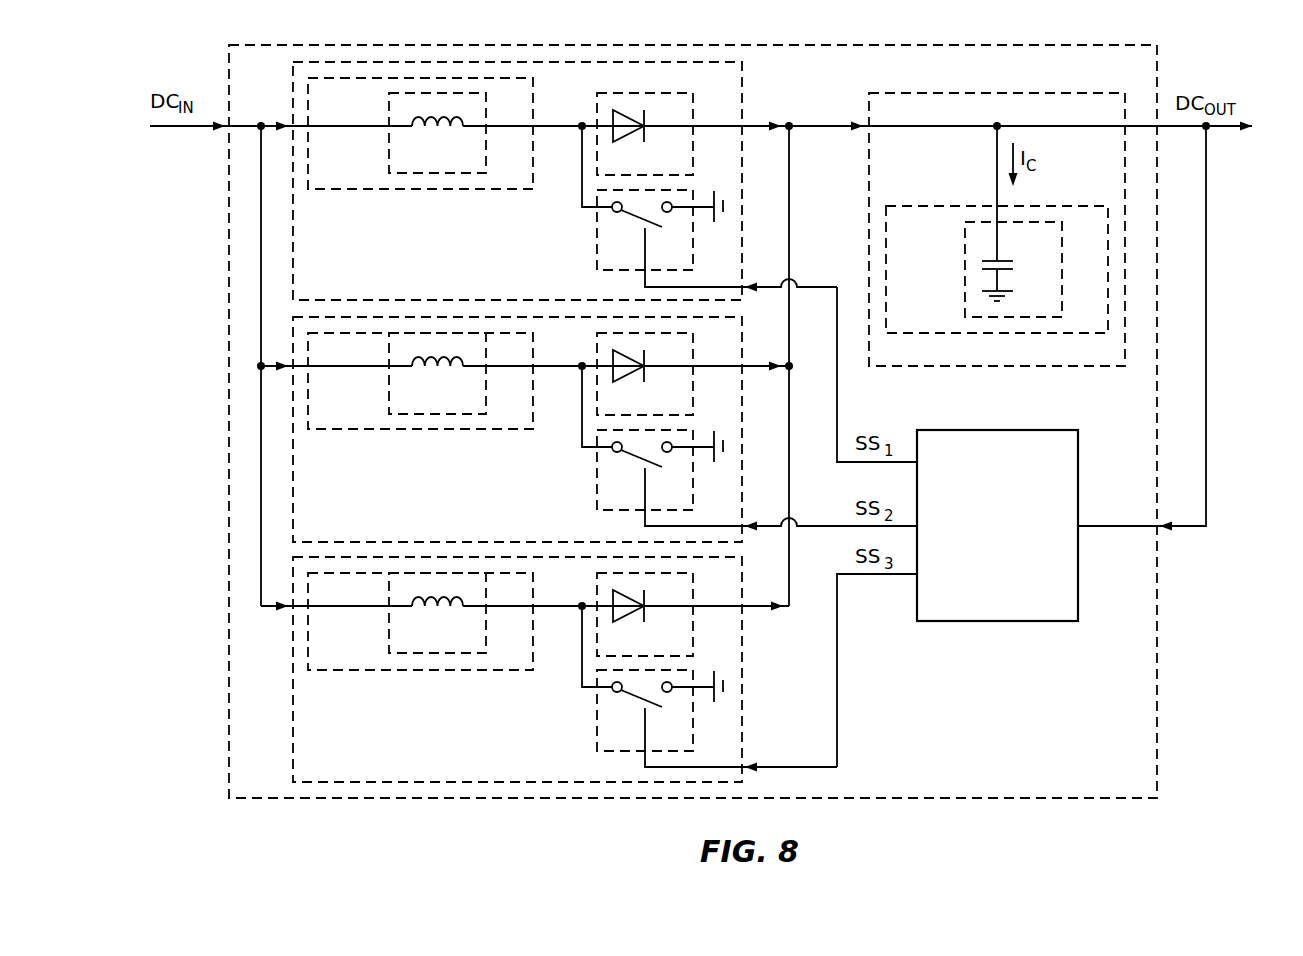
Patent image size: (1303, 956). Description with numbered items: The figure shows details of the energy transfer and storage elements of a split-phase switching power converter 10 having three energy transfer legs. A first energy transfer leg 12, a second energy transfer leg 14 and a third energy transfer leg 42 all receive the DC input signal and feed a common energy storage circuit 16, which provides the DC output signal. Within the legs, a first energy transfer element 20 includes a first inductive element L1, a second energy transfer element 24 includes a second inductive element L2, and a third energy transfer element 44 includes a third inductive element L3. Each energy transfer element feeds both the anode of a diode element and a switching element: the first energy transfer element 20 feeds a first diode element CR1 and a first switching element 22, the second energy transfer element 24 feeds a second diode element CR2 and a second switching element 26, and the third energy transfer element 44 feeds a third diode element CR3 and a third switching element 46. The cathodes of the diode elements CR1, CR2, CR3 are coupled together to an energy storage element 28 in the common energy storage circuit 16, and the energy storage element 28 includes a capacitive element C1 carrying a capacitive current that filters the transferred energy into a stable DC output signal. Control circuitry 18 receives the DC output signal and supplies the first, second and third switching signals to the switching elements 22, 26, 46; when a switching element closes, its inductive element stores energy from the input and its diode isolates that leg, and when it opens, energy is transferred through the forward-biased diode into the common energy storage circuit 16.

The split-phase switching power converter 10 is at (1139, 782).
The first energy transfer leg 12 is at (346, 291).
The second energy transfer leg 14 is at (348, 531).
The third energy transfer leg 42 is at (348, 771).
The first energy transfer element 20 is at (358, 167).
The second energy transfer element 24 is at (358, 414).
The third energy transfer element 44 is at (358, 654).
The first inductive element L1 is at (450, 162).
The second inductive element L2 is at (450, 404).
The third inductive element L3 is at (450, 644).
The first diode element CR1 is at (682, 166).
The second diode element CR2 is at (682, 406).
The third diode element CR3 is at (682, 646).
The first switching element 22 is at (683, 259).
The second switching element 26 is at (683, 499).
The third switching element 46 is at (683, 739).
The common energy storage circuit 16 is at (908, 179).
The energy storage element 28 is at (934, 316).
The capacitive element C1 is at (1046, 252).
The control circuitry 18 is at (1011, 556).